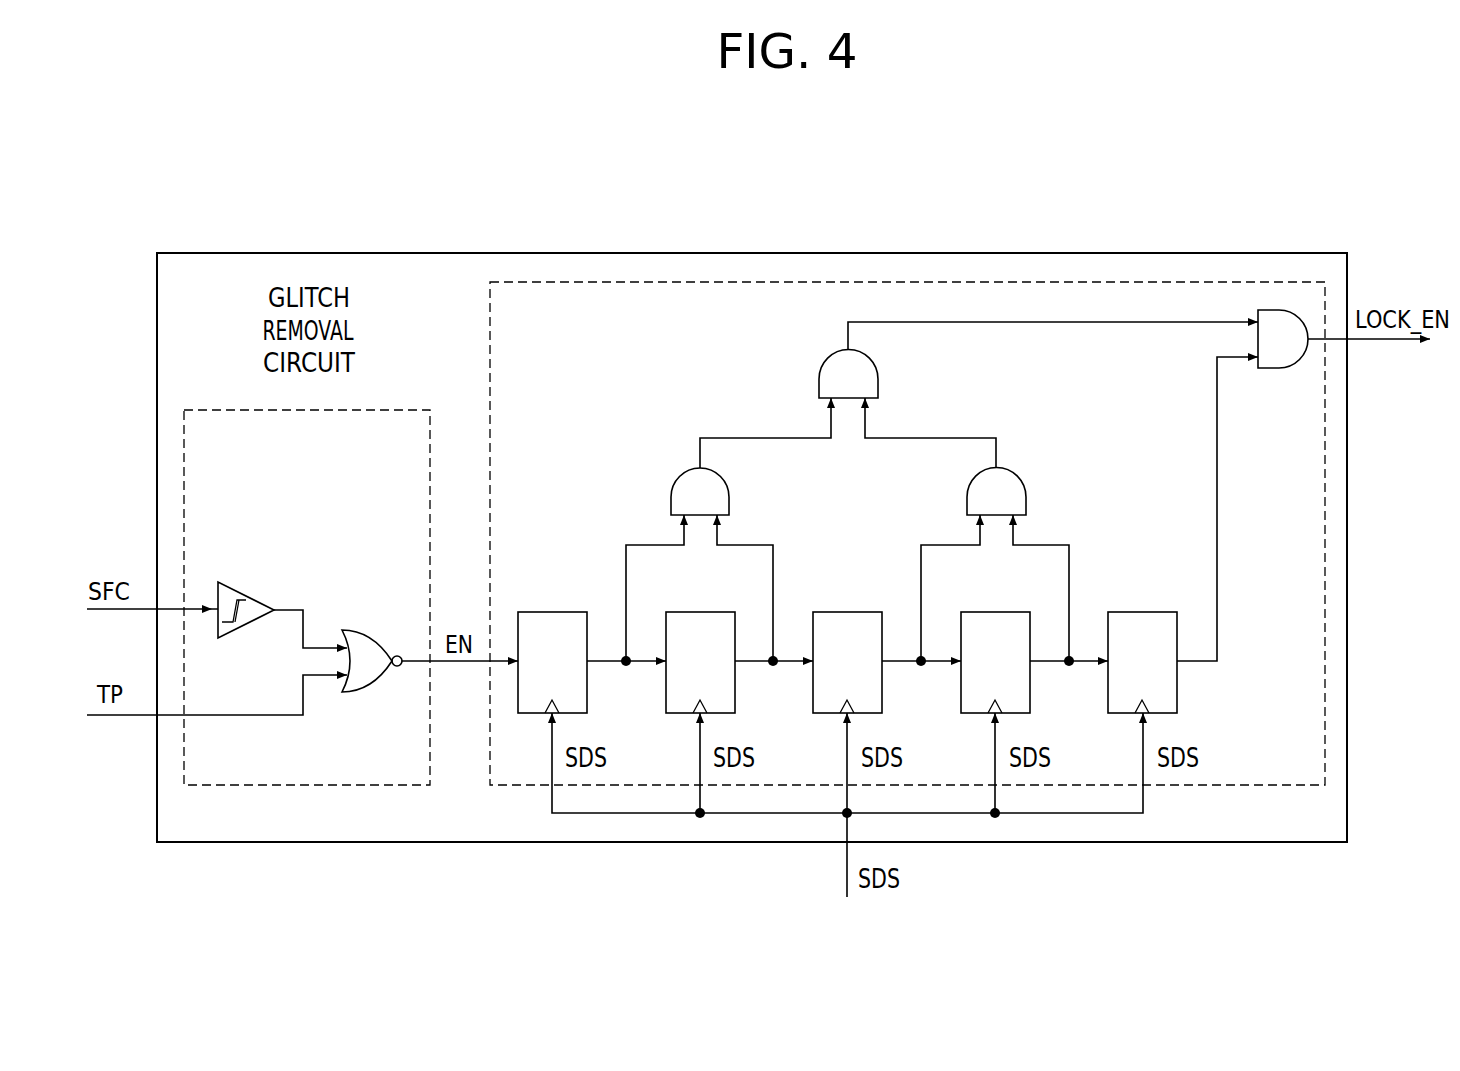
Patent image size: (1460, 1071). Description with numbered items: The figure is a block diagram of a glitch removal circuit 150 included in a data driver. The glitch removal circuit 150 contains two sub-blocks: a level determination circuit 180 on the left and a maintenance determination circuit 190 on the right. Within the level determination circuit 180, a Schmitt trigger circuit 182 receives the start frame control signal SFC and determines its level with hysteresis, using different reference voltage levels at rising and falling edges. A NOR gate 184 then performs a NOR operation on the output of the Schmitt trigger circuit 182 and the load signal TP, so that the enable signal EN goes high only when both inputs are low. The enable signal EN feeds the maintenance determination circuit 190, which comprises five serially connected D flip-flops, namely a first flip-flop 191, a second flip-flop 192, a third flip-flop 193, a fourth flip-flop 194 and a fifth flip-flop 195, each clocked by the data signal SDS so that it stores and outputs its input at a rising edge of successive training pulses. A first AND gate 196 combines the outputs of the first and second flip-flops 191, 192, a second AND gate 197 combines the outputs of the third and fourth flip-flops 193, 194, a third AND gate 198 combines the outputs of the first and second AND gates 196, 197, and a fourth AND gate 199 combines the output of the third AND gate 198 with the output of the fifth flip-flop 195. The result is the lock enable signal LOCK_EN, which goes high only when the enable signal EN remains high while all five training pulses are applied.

The glitch removal circuit 150 is at (750, 253).
The level determination circuit 180 is at (408, 410).
The Schmitt trigger circuit 182 is at (260, 596).
The NOR gate 184 is at (359, 630).
The maintenance determination circuit 190 is at (1000, 282).
The first flip-flop 191 is at (551, 612).
The second flip-flop 192 is at (699, 612).
The third flip-flop 193 is at (847, 612).
The fourth flip-flop 194 is at (995, 612).
The fifth flip-flop 195 is at (1143, 612).
The first AND gate 196 is at (729, 487).
The second AND gate 197 is at (1026, 493).
The third AND gate 198 is at (878, 368).
The fourth AND gate 199 is at (1278, 368).